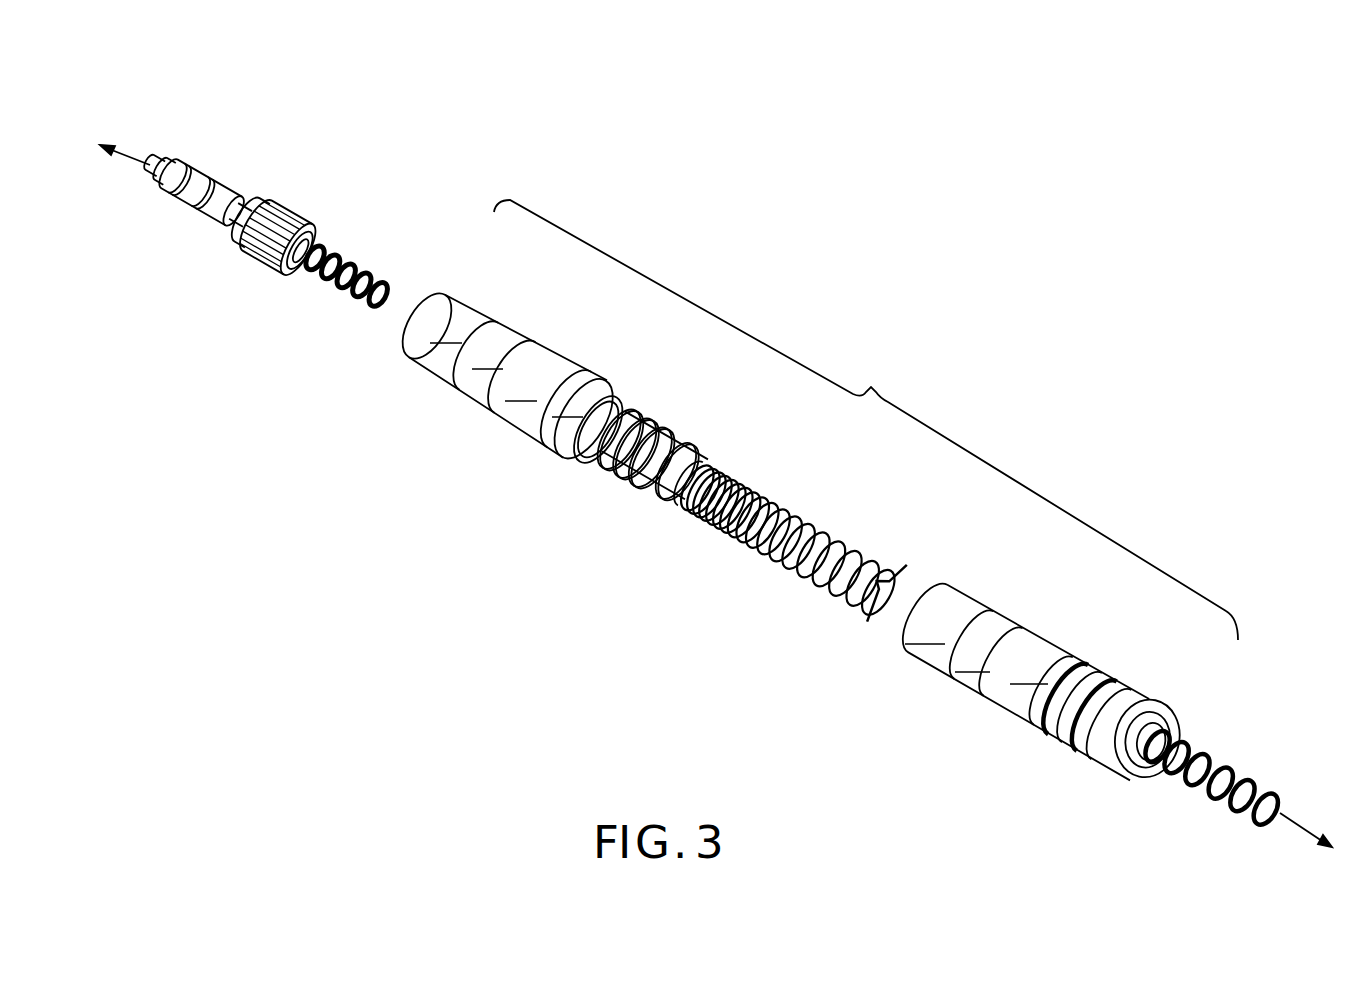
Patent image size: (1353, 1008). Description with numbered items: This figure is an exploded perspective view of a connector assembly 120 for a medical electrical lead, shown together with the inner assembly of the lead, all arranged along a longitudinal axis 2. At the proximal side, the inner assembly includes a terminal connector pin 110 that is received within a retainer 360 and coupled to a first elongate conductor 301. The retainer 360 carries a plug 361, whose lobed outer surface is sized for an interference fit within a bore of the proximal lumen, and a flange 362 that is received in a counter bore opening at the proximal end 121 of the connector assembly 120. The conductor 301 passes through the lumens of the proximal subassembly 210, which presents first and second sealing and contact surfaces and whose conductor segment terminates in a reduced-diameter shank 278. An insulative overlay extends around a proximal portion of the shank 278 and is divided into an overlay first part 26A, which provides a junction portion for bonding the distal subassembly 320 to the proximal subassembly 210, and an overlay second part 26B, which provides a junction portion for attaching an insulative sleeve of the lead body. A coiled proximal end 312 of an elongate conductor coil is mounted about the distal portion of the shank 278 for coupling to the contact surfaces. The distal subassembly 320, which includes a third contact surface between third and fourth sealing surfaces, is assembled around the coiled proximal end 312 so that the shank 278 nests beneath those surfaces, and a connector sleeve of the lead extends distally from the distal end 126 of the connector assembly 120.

The axis 2 is at (141, 157).
The terminal connector pin 110 is at (245, 172).
The retainer 360 is at (291, 250).
The plug 361 is at (270, 262).
The flange 362 is at (243, 240).
The first elongate conductor 301 is at (331, 285).
The proximal subassembly 210 is at (498, 419).
The proximal end 121 is at (404, 388).
The overlay first part 26A is at (651, 415).
The overlay second part 26B is at (681, 456).
The shank 278 is at (708, 453).
The coiled proximal end 312 is at (790, 507).
The connector assembly 120 is at (866, 420).
The distal subassembly 320 is at (1049, 723).
The distal end 126 is at (1150, 790).